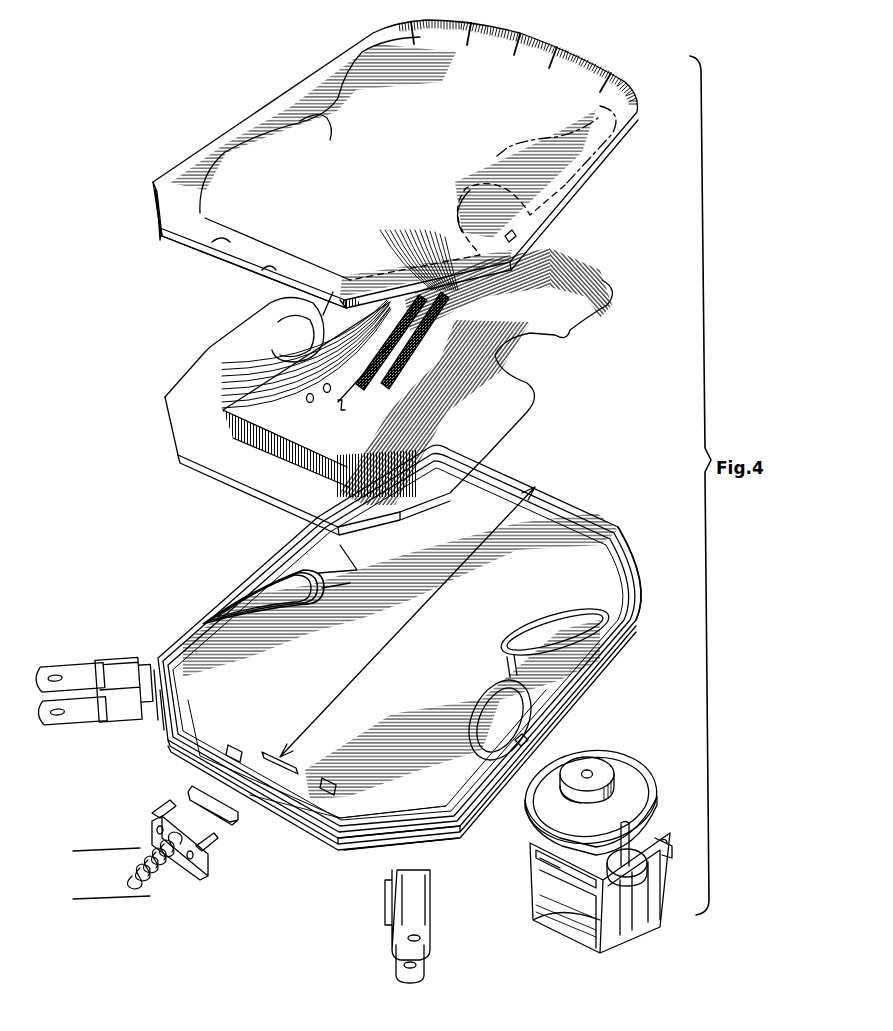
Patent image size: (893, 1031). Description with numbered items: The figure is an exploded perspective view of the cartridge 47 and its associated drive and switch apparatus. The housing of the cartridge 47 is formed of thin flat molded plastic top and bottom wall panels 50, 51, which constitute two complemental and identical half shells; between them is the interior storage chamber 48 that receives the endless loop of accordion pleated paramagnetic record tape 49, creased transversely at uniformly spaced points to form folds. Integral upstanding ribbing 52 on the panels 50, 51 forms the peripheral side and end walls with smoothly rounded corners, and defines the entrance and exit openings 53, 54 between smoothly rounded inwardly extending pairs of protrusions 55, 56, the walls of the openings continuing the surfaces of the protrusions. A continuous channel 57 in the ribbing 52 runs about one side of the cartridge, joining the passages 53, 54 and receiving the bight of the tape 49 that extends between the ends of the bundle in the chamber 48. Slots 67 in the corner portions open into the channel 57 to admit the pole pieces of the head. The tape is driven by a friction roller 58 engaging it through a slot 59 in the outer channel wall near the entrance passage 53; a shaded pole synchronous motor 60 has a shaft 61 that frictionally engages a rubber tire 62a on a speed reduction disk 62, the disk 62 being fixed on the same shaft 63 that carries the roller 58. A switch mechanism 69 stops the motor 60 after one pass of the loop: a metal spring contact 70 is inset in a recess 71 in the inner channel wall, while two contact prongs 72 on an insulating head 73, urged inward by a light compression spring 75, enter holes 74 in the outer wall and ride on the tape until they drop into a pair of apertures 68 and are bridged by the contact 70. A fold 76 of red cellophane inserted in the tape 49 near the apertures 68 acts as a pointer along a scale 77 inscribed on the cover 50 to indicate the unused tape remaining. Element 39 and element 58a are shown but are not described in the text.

The cartridge 47 is at (646, 68).
The scale 77 is at (516, 30).
The top wall panel 50 is at (527, 122).
The exit opening 54 is at (327, 118).
The entrance opening 53 is at (496, 185).
The ribbing 52 is at (580, 168).
The storage chamber 48 is at (526, 512).
The bottom wall panel 51 is at (630, 525).
The slot 59 is at (512, 234).
The protrusions 55 is at (510, 660).
The protrusions 56 is at (357, 570).
The channel 57 is at (290, 795).
The recess 71 is at (270, 760).
The holes 74 is at (227, 262).
The slots 67 is at (417, 298).
The record tape 49 is at (540, 375).
The fold of red cellophane 76 is at (410, 338).
The apertures 68 is at (327, 393).
The plug connector 39 is at (99, 648).
The switch mechanism 69 is at (226, 867).
The spring contact 70 is at (212, 812).
The contact prongs 72 is at (170, 800).
The insulating head 73 is at (190, 862).
The compression spring 75 is at (128, 860).
The motor 60 is at (658, 928).
The disk 62 is at (636, 785).
The rubber tire 62a is at (655, 790).
The hub 58a is at (607, 763).
The friction roller 58 is at (590, 768).
The shaft 63 is at (588, 803).
The motor shaft 61 is at (621, 828).